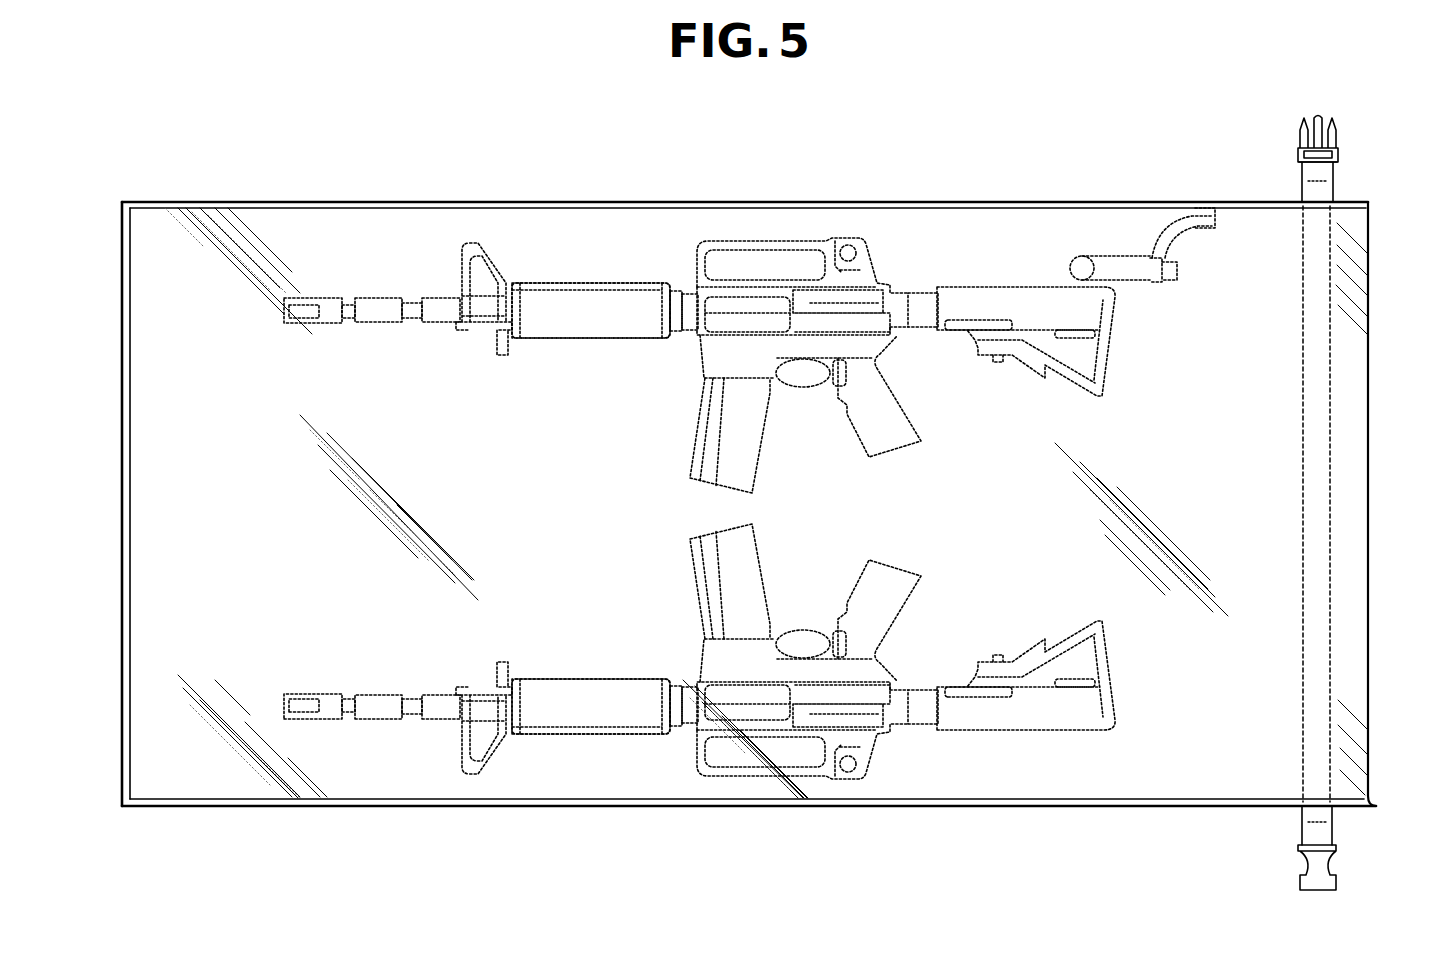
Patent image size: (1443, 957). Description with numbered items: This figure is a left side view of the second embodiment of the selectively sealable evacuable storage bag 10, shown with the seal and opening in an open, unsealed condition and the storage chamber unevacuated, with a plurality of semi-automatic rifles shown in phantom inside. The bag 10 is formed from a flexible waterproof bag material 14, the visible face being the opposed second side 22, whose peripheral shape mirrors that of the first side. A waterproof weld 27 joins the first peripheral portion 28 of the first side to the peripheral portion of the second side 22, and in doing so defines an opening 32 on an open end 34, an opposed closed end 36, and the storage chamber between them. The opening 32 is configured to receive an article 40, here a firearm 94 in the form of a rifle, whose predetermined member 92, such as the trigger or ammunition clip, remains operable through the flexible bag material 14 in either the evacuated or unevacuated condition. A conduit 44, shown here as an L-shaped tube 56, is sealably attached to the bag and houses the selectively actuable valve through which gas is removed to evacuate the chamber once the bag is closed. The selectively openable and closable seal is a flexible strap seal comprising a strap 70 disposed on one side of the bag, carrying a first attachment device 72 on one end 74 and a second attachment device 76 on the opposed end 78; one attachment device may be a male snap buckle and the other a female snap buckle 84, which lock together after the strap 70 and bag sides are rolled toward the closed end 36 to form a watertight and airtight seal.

The selectively sealable evacuable storage bag 10 is at (918, 98).
The flexible waterproof bag material 14 is at (498, 242).
The second side 22 is at (421, 238).
The waterproof weld 27 is at (908, 197).
The first peripheral portion 28 is at (786, 200).
The opening 32 is at (1372, 478).
The open end 34 is at (1377, 806).
The closed end 36 is at (120, 496).
The article 40 is at (572, 286).
The conduit 44 is at (1103, 256).
The L-shaped tube 56 is at (1160, 258).
The strap 70 is at (1330, 390).
The first attachment device 72 is at (1330, 118).
The one end 74 is at (1333, 176).
The second attachment device 76 is at (1338, 880).
The opposed end 78 is at (1333, 836).
The female snap buckle 84 is at (1367, 499).
The predetermined member 92 is at (805, 372).
The firearm 94 is at (612, 735).